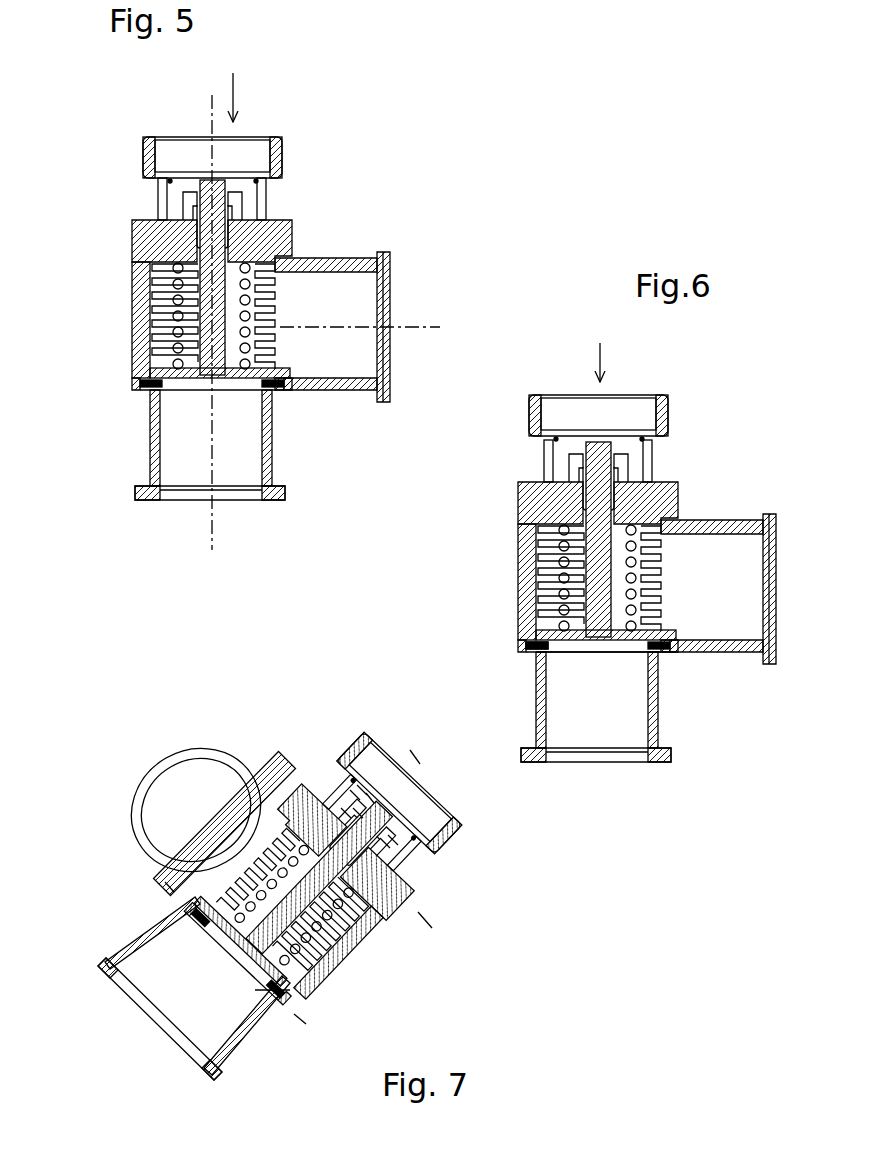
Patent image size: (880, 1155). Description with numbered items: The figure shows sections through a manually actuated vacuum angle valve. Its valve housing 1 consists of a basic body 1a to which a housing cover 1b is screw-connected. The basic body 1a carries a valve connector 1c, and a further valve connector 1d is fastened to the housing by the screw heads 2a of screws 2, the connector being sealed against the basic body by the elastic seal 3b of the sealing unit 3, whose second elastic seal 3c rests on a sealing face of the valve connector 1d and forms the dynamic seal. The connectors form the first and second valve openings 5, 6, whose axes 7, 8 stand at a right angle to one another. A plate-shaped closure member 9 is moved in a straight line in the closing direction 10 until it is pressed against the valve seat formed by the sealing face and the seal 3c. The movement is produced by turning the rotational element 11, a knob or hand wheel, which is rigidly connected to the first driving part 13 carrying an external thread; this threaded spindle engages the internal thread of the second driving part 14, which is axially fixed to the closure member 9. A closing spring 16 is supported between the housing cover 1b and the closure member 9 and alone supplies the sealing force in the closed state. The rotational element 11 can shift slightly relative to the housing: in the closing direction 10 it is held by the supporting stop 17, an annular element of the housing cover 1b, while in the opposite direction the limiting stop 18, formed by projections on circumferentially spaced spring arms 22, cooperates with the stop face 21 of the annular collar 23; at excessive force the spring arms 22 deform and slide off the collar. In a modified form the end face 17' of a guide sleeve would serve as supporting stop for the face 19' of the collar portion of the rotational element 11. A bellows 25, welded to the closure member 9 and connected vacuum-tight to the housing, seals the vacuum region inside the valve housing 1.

In FIG. 5, the valve housing 1 is at (106, 351).
In FIG. 6, the valve housing 1 is at (505, 545).
In FIG. 7, the valve housing 1 is at (272, 1000).
In FIG. 7, the basic body 1a is at (370, 960).
In FIG. 7, the housing cover 1b is at (425, 920).
In FIG. 5, the valve connector 1c is at (335, 262).
In FIG. 7, the valve connector 1c is at (178, 810).
In FIG. 7, the valve connector 1d is at (227, 1040).
In FIG. 7, the screws 2 is at (200, 867).
In FIG. 7, the screw heads 2a is at (170, 887).
In FIG. 5, the sealing unit 3 is at (280, 388).
In FIG. 6, the sealing unit 3 is at (535, 655).
In FIG. 7, the sealing unit 3 is at (198, 903).
In FIG. 6, the elastic seal 3b is at (545, 642).
In FIG. 6, the elastic seal 3c is at (548, 645).
In FIG. 5, the first valve opening 5 is at (181, 470).
In FIG. 6, the first valve opening 5 is at (568, 732).
In FIG. 5, the second valve opening 6 is at (362, 355).
In FIG. 6, the second valve opening 6 is at (750, 612).
In FIG. 5, the axis 7 is at (214, 470).
In FIG. 5, the axis 8 is at (402, 327).
In FIG. 5, the closure member 9 is at (148, 390).
In FIG. 6, the closure member 9 is at (590, 645).
In FIG. 7, the closure member 9 is at (250, 925).
In FIG. 5, the closing direction 10 is at (236, 96).
In FIG. 6, the closing direction 10 is at (604, 364).
In FIG. 7, the closing direction 10 is at (423, 763).
In FIG. 5, the rotational element 11 is at (274, 156).
In FIG. 6, the rotational element 11 is at (663, 420).
In FIG. 7, the rotational element 11 is at (457, 827).
In FIG. 5, the first driving part 13 is at (213, 225).
In FIG. 6, the first driving part 13 is at (600, 490).
In FIG. 7, the first driving part 13 is at (337, 810).
In FIG. 5, the second driving part 14 is at (244, 262).
In FIG. 6, the second driving part 14 is at (598, 570).
In FIG. 7, the second driving part 14 is at (255, 860).
In FIG. 5, the closing spring 16 is at (246, 320).
In FIG. 6, the closing spring 16 is at (634, 578).
In FIG. 7, the supporting stop 17 is at (344, 734).
In FIG. 7, the end face 17' is at (464, 815).
In FIG. 7, the limiting stop 18 is at (370, 798).
In FIG. 7, the face 19' is at (429, 868).
In FIG. 7, the stop face 21 is at (393, 840).
In FIG. 7, the spring arms 22 is at (355, 795).
In FIG. 7, the annular collar 23 is at (346, 813).
In FIG. 5, the bellows 25 is at (150, 283).
In FIG. 7, the bellows 25 is at (358, 915).